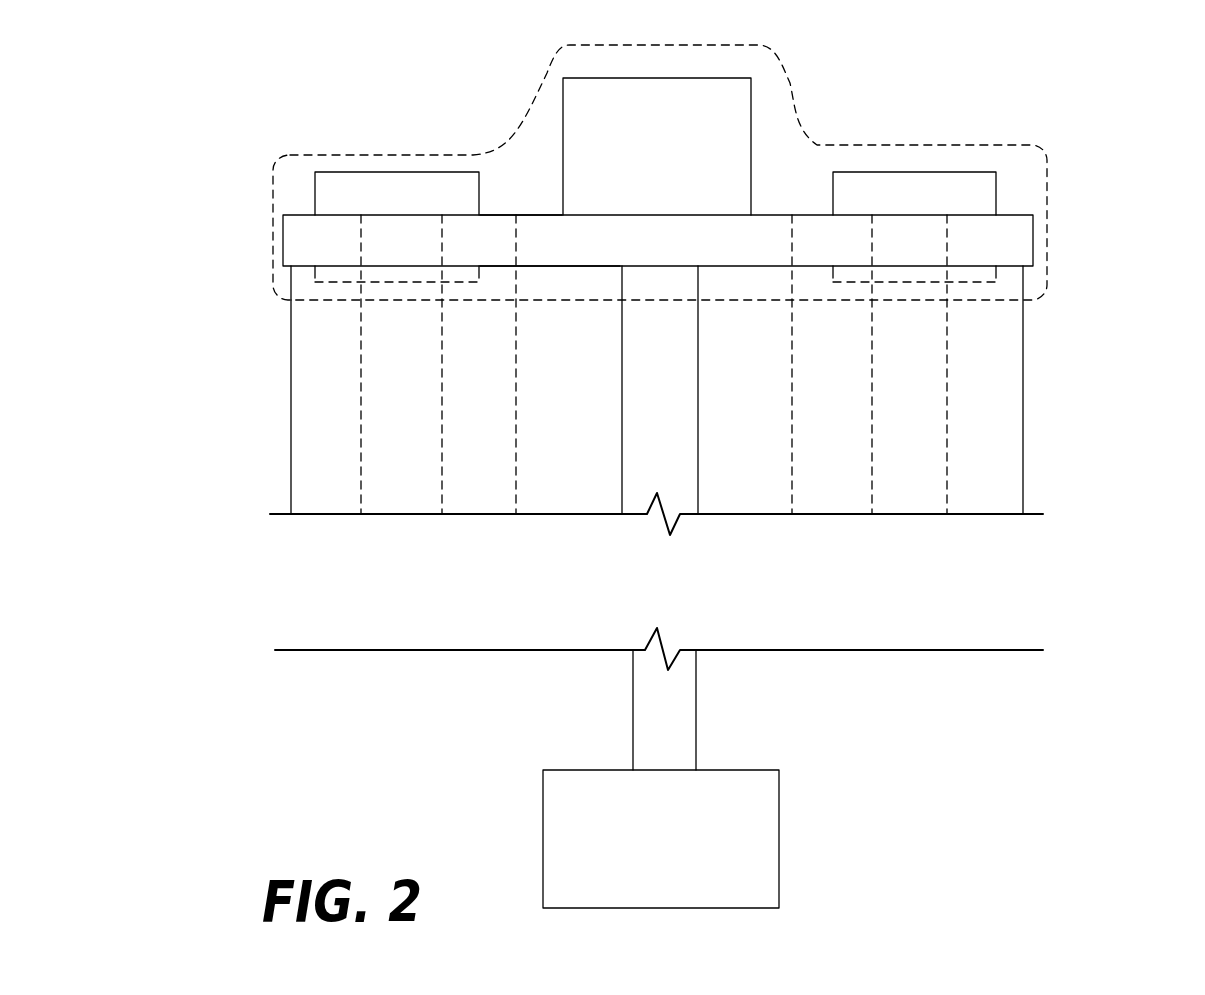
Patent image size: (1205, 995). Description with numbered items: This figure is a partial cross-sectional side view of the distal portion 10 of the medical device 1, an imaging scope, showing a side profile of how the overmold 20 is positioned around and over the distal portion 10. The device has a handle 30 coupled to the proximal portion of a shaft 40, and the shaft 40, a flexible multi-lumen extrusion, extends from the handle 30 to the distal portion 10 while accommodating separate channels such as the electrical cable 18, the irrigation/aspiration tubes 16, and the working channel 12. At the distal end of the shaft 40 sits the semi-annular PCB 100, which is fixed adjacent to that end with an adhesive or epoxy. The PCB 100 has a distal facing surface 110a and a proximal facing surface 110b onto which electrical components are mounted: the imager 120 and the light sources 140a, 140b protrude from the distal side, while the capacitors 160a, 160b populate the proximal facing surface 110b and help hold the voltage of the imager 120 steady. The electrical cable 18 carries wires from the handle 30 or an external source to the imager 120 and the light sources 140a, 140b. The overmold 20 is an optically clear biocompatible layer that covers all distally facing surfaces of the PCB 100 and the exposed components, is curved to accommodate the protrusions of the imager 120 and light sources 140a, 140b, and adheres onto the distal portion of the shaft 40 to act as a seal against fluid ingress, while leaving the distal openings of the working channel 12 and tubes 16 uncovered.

The medical device 1 is at (252, 58).
The distal portion 10 is at (968, 91).
The working channel 12 is at (740, 488).
The irrigation/aspiration tubes 16 is at (397, 490).
The electrical cable 18 is at (638, 477).
The overmold 20 is at (1048, 238).
The handle 30 is at (563, 830).
The shaft 40 is at (1008, 451).
The PCB 100 is at (1022, 257).
The distal facing surface 110a is at (535, 215).
The proximal facing surface 110b is at (548, 267).
The imager 120 is at (718, 130).
The light source 140a is at (965, 190).
The light source 140b is at (352, 204).
The capacitor 160a is at (327, 413).
The capacitor 160b is at (335, 274).